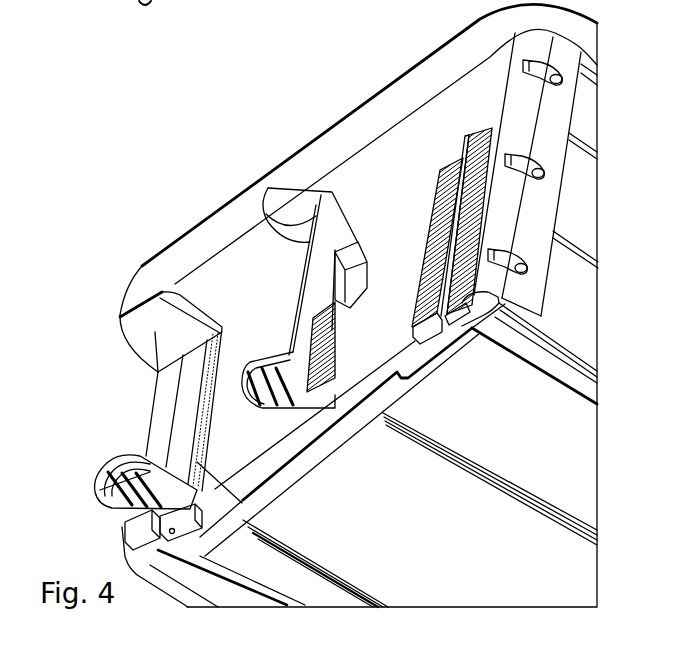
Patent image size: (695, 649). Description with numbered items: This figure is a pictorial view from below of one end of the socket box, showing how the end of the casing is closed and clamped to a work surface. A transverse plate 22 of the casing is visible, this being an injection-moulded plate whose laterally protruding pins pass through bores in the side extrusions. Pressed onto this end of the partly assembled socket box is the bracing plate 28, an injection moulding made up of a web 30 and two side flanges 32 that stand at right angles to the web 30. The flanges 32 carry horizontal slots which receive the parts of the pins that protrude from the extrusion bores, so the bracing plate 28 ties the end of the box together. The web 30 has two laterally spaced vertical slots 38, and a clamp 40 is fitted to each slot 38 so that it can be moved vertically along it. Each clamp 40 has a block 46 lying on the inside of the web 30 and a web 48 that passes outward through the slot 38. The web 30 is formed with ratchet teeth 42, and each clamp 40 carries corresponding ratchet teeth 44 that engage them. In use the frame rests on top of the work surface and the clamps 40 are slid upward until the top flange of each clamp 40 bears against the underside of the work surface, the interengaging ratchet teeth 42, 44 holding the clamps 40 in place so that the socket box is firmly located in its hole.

The transverse plate 22 is at (293, 463).
The bracing plate 28 is at (220, 271).
The web 30 is at (375, 175).
The side flange 32 is at (552, 135).
The vertical slot 38 is at (471, 132).
The clamp 40 is at (130, 407).
The ratchet teeth 42 is at (442, 168).
The ratchet teeth 44 is at (293, 346).
The block 46 is at (348, 268).
The web 48 is at (335, 305).